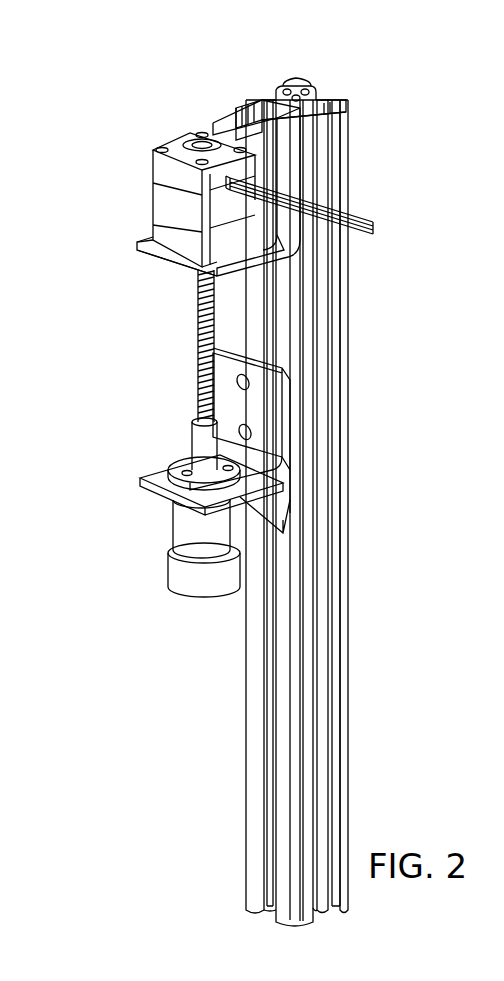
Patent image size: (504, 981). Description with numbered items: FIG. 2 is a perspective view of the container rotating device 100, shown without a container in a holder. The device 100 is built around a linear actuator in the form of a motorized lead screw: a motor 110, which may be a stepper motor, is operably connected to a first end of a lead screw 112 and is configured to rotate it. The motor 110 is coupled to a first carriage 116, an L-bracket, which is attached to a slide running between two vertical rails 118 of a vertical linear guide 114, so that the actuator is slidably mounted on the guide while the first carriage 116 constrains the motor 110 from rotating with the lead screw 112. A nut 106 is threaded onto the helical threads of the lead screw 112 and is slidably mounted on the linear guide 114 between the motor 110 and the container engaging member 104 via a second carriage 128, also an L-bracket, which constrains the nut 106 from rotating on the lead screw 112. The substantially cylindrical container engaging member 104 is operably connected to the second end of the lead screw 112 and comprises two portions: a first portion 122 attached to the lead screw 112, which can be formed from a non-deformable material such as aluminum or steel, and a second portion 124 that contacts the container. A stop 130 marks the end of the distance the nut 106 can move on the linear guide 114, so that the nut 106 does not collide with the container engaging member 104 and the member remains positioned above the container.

The device 100 is at (374, 82).
The container engaging member 104 is at (88, 497).
The nut 106 is at (188, 438).
The motor 110 is at (150, 152).
The lead screw 112 is at (195, 320).
The vertical linear guide 114 is at (286, 290).
The first carriage 116 is at (290, 160).
The vertical rails 118 is at (238, 118).
The first portion 122 is at (173, 527).
The second portion 124 is at (173, 574).
The second carriage 128 is at (137, 478).
The stop 130 is at (276, 500).